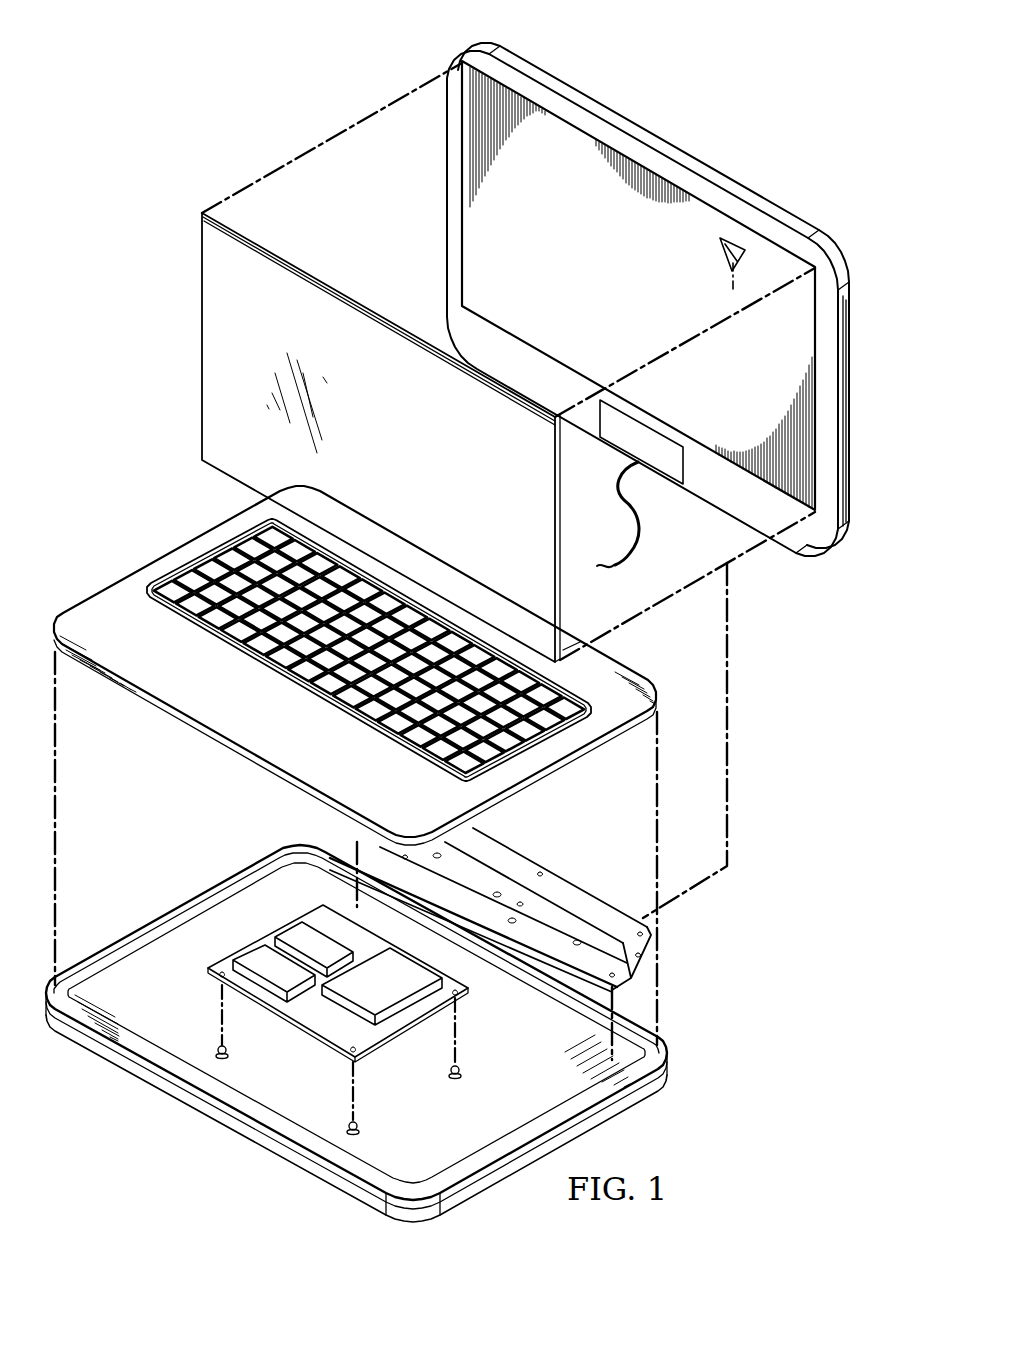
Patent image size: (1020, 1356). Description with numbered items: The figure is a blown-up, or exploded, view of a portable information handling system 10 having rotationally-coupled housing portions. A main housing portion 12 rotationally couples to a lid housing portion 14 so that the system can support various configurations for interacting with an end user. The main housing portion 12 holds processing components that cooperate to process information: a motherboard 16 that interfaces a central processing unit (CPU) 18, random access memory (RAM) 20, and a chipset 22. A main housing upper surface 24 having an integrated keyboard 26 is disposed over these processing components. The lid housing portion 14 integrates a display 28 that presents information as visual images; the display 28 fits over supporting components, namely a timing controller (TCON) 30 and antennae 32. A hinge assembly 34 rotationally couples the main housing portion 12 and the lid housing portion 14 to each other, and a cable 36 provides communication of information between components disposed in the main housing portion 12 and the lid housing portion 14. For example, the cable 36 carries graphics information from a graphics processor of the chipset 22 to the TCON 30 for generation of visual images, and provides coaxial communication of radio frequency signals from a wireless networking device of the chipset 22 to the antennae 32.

The portable information handling system 10 is at (151, 163).
The main housing portion 12 is at (155, 1093).
The lid housing portion 14 is at (657, 138).
The motherboard 16 is at (420, 1056).
The central processing unit 18 is at (293, 936).
The random access memory 20 is at (278, 972).
The chipset 22 is at (367, 995).
The main housing upper surface 24 is at (176, 717).
The keyboard 26 is at (188, 560).
The display 28 is at (393, 493).
The timing controller 30 is at (671, 443).
The antennae 32 is at (720, 258).
The hinge assembly 34 is at (570, 881).
The cable 36 is at (645, 524).